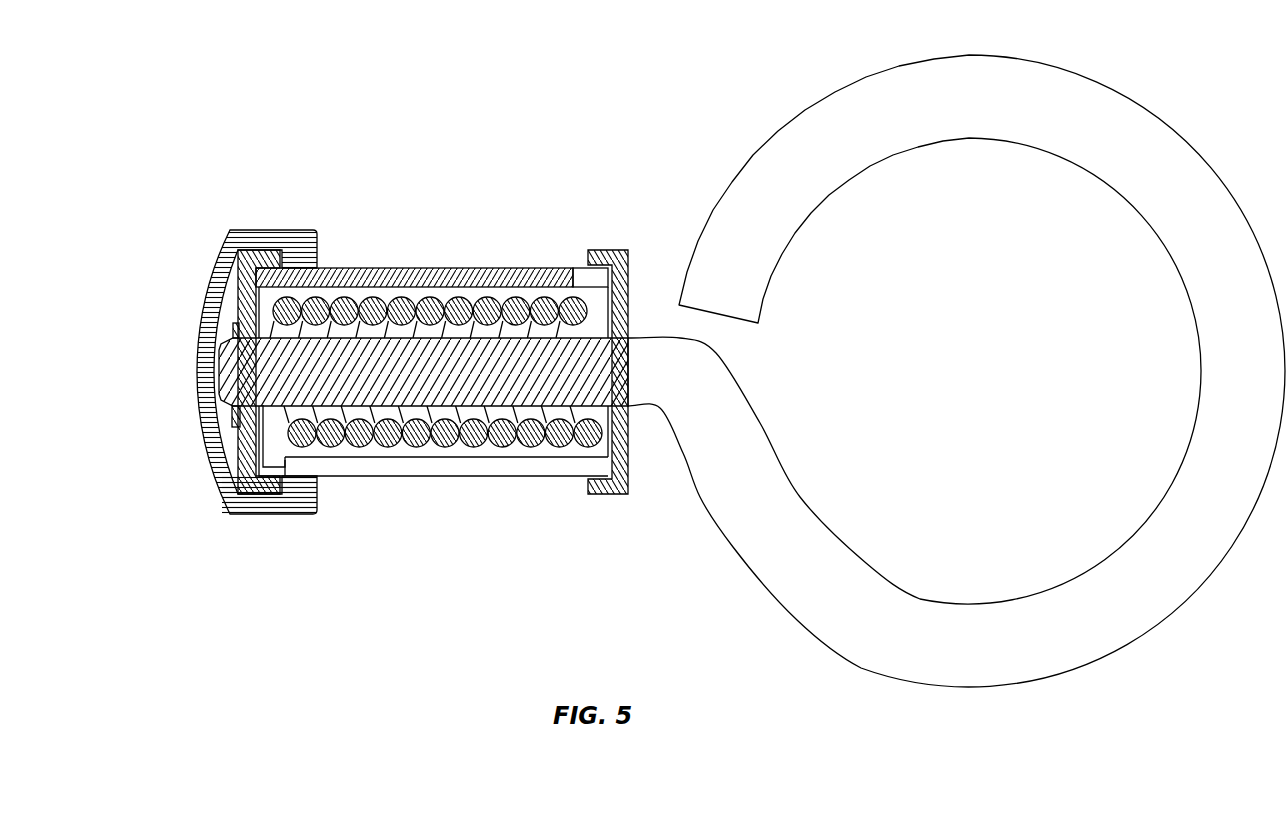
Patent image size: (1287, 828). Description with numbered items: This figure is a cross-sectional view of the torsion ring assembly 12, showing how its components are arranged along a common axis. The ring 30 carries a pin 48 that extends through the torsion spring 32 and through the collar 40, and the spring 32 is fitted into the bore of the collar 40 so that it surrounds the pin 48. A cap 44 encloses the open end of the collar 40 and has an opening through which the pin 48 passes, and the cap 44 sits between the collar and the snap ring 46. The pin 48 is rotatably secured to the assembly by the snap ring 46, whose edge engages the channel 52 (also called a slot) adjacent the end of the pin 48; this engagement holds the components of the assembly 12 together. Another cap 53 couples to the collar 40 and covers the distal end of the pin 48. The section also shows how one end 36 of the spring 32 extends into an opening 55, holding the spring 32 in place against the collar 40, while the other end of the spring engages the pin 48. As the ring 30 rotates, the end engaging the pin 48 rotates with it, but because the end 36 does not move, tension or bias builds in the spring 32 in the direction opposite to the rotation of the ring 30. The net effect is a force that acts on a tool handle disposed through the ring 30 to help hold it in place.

The torsion ring assembly 12 is at (558, 150).
The ring 30 is at (743, 168).
The torsion spring 32 is at (400, 298).
The end 36 is at (287, 462).
The collar 40 is at (360, 268).
The cap 44 is at (262, 250).
The snap ring 46 is at (233, 331).
The pin 48 is at (618, 361).
The channel 52 is at (221, 384).
The cap 53 is at (237, 515).
The opening 55 is at (296, 458).